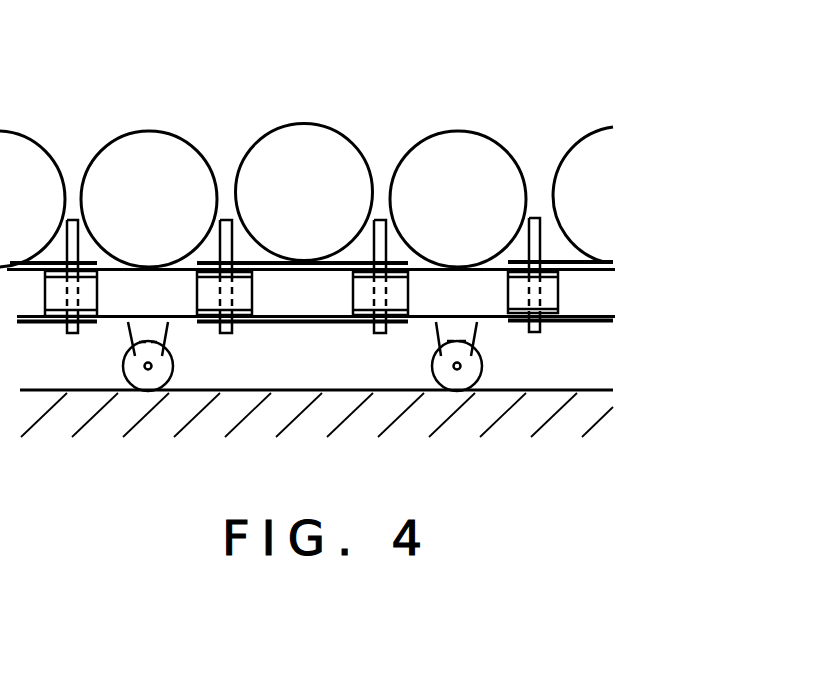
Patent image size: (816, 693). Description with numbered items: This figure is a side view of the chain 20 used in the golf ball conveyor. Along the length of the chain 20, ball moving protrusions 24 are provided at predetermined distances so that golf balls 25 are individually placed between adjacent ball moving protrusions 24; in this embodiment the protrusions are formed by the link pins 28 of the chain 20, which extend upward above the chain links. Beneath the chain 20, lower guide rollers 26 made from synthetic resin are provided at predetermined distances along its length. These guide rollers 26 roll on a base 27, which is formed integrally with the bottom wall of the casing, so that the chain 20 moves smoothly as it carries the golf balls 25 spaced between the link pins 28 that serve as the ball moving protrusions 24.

The chain 20 is at (622, 260).
The ball moving protrusion 24 is at (538, 228).
The golf ball 25 is at (453, 165).
The lower guide roller 26 is at (482, 363).
The base 27 is at (582, 402).
The link pin 28 is at (378, 333).